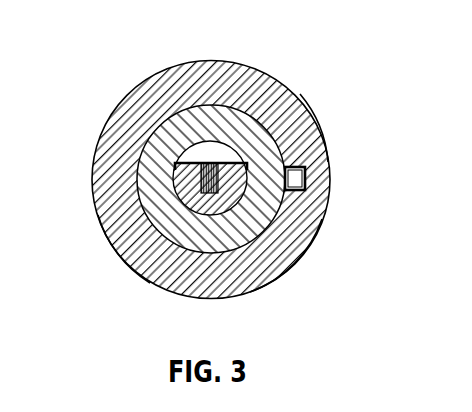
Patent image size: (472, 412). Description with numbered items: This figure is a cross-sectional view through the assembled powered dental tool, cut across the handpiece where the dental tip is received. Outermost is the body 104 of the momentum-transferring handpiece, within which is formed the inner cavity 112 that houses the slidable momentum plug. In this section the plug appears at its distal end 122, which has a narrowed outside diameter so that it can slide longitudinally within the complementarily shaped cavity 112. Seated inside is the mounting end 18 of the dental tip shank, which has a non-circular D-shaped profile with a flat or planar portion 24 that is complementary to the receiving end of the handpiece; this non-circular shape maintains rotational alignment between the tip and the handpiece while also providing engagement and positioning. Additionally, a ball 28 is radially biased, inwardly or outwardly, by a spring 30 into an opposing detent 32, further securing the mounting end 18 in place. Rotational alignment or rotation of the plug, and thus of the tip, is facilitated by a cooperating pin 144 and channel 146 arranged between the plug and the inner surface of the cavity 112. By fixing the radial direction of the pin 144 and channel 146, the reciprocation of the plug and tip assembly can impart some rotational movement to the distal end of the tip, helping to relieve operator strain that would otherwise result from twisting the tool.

The mounting end 18 is at (235, 235).
The flat or planar portion 24 is at (283, 88).
The ball 28 is at (120, 207).
The spring 30 is at (112, 247).
The detent 32 is at (210, 162).
The body 104 is at (107, 160).
The inner cavity 112 is at (310, 110).
The distal end 122 is at (283, 262).
The pin 144 is at (308, 157).
The channel 146 is at (315, 187).